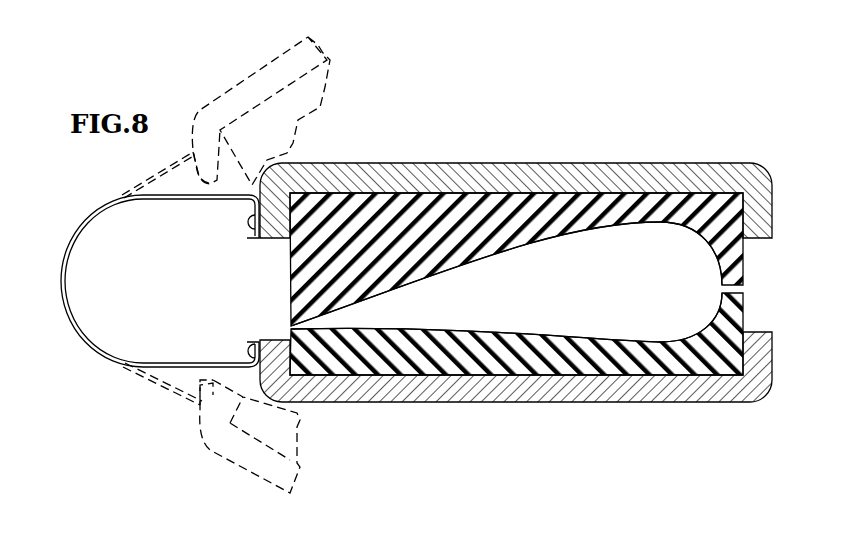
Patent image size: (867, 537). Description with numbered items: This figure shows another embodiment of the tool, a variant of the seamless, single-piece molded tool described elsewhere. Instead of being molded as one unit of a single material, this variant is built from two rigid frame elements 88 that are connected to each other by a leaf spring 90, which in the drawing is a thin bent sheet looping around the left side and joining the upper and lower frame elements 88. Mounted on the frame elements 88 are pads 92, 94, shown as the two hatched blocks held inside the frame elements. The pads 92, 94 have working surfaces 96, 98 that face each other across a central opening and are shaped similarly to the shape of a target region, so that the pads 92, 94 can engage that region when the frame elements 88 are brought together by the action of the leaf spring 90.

The rigid frame element 88 is at (260, 76).
The leaf spring 90 is at (62, 283).
The pad 92 is at (292, 113).
The pad 94 is at (452, 332).
The working surface 96 is at (653, 220).
The working surface 98 is at (662, 342).